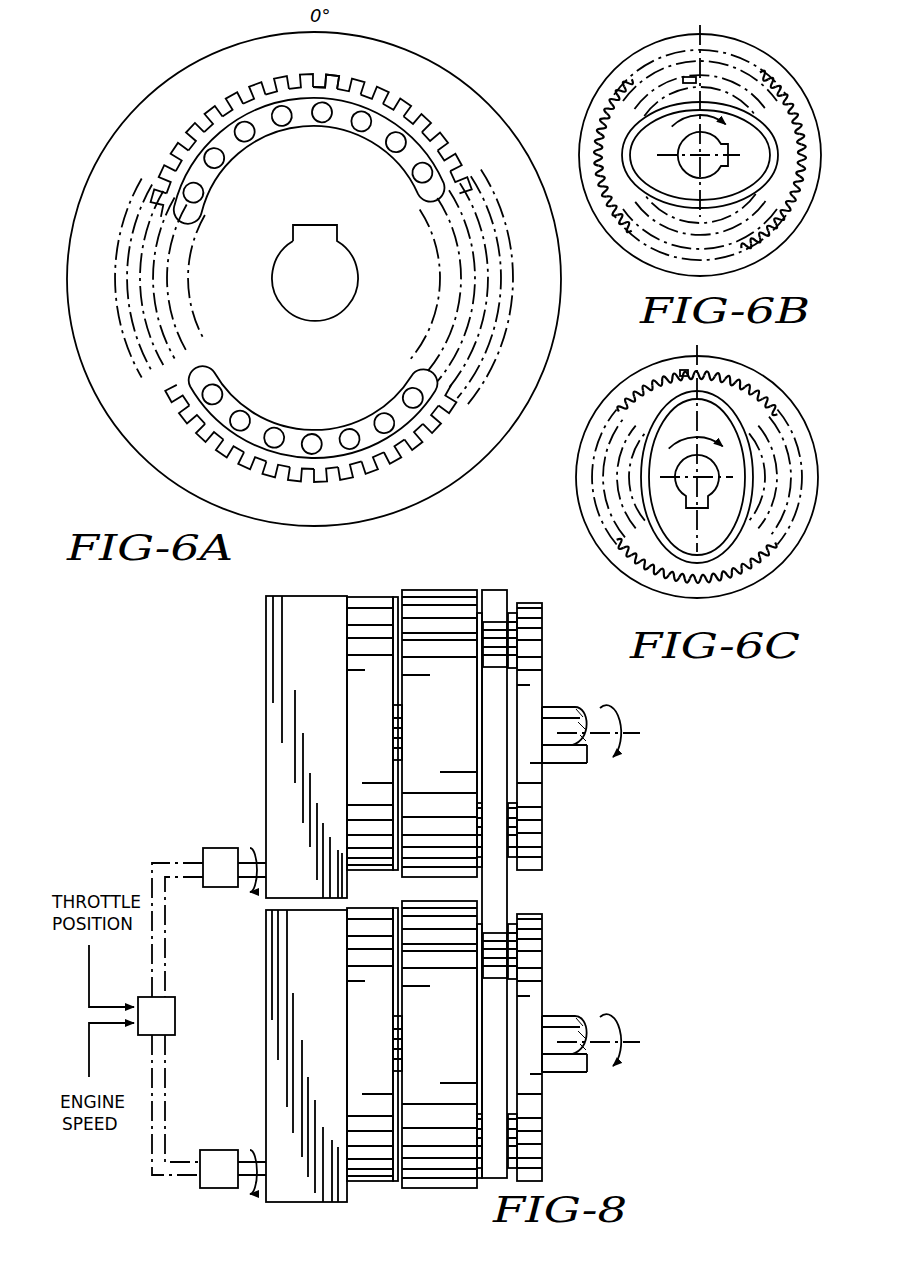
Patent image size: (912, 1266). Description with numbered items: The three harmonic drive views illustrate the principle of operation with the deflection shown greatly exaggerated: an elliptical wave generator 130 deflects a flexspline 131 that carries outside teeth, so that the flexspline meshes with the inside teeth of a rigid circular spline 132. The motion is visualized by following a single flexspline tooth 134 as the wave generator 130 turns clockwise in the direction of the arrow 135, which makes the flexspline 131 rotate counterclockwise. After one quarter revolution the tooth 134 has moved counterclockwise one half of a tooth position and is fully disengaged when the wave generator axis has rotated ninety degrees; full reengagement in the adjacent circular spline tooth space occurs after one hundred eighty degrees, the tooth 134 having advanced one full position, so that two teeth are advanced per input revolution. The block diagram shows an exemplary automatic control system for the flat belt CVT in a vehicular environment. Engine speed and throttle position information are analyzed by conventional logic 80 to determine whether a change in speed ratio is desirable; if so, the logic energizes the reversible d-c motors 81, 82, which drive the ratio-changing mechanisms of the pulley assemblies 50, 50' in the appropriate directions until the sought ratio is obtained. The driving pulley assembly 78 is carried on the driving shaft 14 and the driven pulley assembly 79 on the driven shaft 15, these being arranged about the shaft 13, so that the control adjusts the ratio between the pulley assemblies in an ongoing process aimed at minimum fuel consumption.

In FIG. 6A, the elliptical wave generator 130 is at (332, 184).
In FIG. 6B, the elliptical wave generator 130 is at (732, 118).
In FIG. 6C, the elliptical wave generator 130 is at (652, 508).
In FIG. 6A, the flexspline 131 is at (160, 198).
In FIG. 6B, the flexspline 131 is at (612, 97).
In FIG. 6C, the flexspline 131 is at (718, 392).
In FIG. 6A, the rigid circular spline 132 is at (405, 55).
In FIG. 6B, the rigid circular spline 132 is at (780, 86).
In FIG. 6C, the rigid circular spline 132 is at (773, 556).
In FIG. 6A, the flexspline tooth 134 is at (317, 77).
In FIG. 6B, the flexspline tooth 134 is at (683, 80).
In FIG. 6C, the flexspline tooth 134 is at (683, 372).
In FIG. 6B, the arrow 135 is at (680, 120).
In FIG. 6C, the arrow 135 is at (683, 446).
In FIG. 8, the pulley assembly 50 is at (283, 747).
In FIG. 8, the pulley assembly 50' is at (282, 1056).
In FIG. 8, the reversible d-c motor 81 is at (226, 848).
In FIG. 8, the reversible d-c motor 82 is at (230, 1135).
In FIG. 8, the conventional logic 80 is at (175, 1012).
In FIG. 8, the shaft 13 is at (504, 888).
In FIG. 8, the driving shaft 14 is at (563, 708).
In FIG. 8, the driven shaft 15 is at (572, 1017).
In FIG. 8, the driving pulley assembly 78 is at (542, 806).
In FIG. 8, the driven pulley assembly 79 is at (542, 1106).